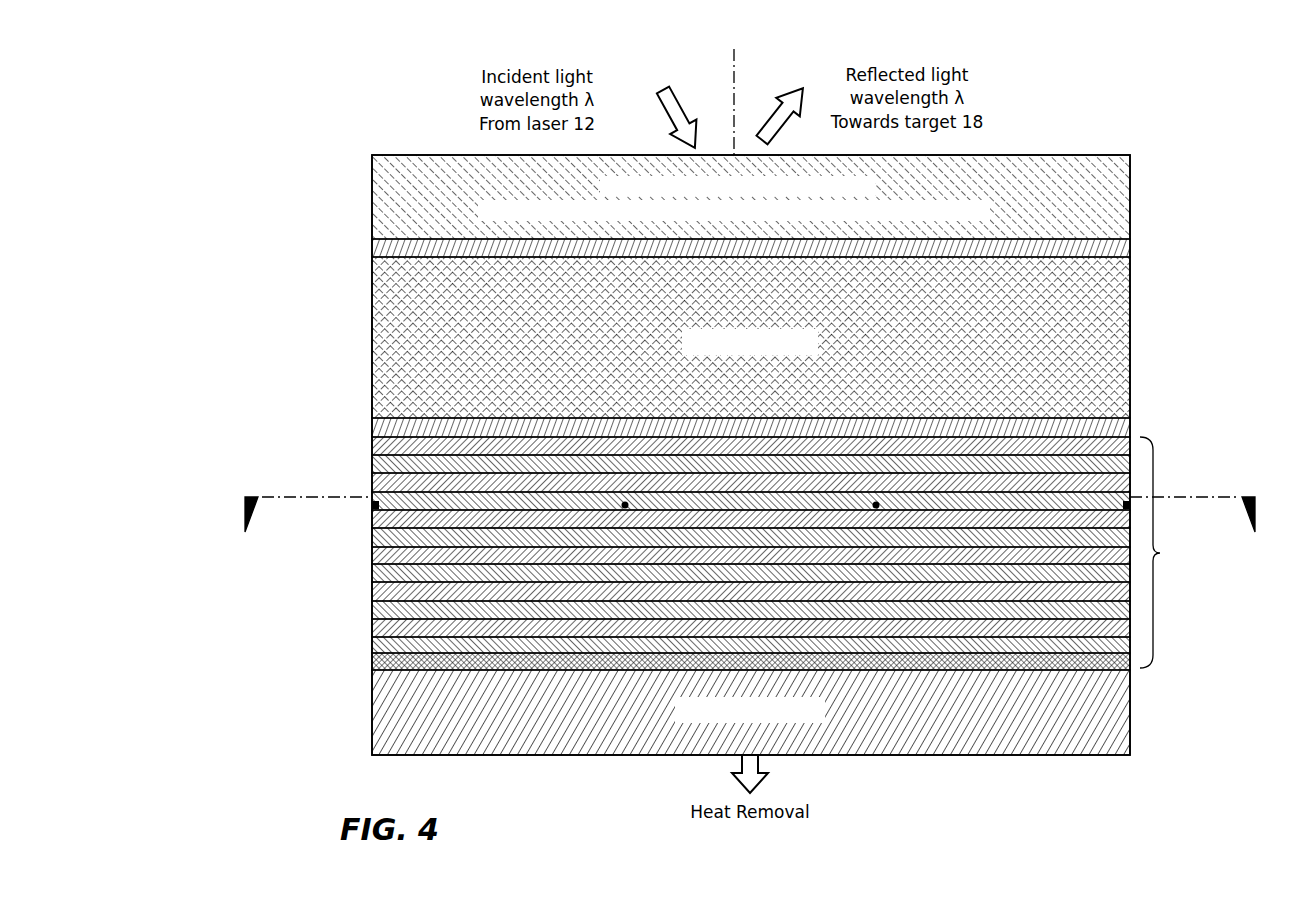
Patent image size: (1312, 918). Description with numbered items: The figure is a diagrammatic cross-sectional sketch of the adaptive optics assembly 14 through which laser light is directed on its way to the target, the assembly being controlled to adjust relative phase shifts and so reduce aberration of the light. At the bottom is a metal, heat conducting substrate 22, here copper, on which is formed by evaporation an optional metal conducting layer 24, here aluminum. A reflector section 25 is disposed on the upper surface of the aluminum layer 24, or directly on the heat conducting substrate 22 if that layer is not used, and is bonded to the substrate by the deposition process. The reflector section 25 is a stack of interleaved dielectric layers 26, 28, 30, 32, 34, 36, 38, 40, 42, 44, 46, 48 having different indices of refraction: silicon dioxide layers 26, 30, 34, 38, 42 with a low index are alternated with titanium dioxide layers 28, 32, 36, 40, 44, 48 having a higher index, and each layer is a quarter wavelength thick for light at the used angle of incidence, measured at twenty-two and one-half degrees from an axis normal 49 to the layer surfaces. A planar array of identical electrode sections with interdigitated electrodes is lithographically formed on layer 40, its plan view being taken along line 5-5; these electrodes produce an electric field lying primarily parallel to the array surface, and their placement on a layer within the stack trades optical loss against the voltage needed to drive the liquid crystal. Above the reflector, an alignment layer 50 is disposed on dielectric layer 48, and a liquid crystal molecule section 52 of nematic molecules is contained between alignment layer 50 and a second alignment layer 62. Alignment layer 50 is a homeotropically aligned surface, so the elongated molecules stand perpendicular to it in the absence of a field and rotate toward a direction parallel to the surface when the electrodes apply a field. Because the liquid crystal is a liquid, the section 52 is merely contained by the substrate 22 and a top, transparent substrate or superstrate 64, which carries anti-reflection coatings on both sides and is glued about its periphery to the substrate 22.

The adaptive optics assembly 14 is at (1098, 117).
The heat conducting substrate 22 is at (384, 731).
The conducting layer 24 is at (384, 662).
The reflector section 25 is at (1162, 552).
The dielectric layer 26 is at (384, 645).
The dielectric layer 28 is at (1120, 625).
The dielectric layer 30 is at (384, 611).
The dielectric layer 32 is at (1120, 588).
The dielectric layer 34 is at (384, 575).
The dielectric layer 36 is at (1120, 555).
The dielectric layer 38 is at (384, 539).
The dielectric layer 40 is at (1120, 518).
The dielectric layer 42 is at (384, 499).
The dielectric layer 44 is at (1120, 483).
The dielectric layer 46 is at (384, 464).
The dielectric layer 48 is at (1120, 446).
The axis normal 49 is at (734, 63).
The alignment layer 50 is at (383, 431).
The liquid crystal molecule section 52 is at (392, 318).
The alignment layer 62 is at (388, 248).
The top transparent substrate 64 is at (393, 194).
The line 5- 5 is at (749, 526).